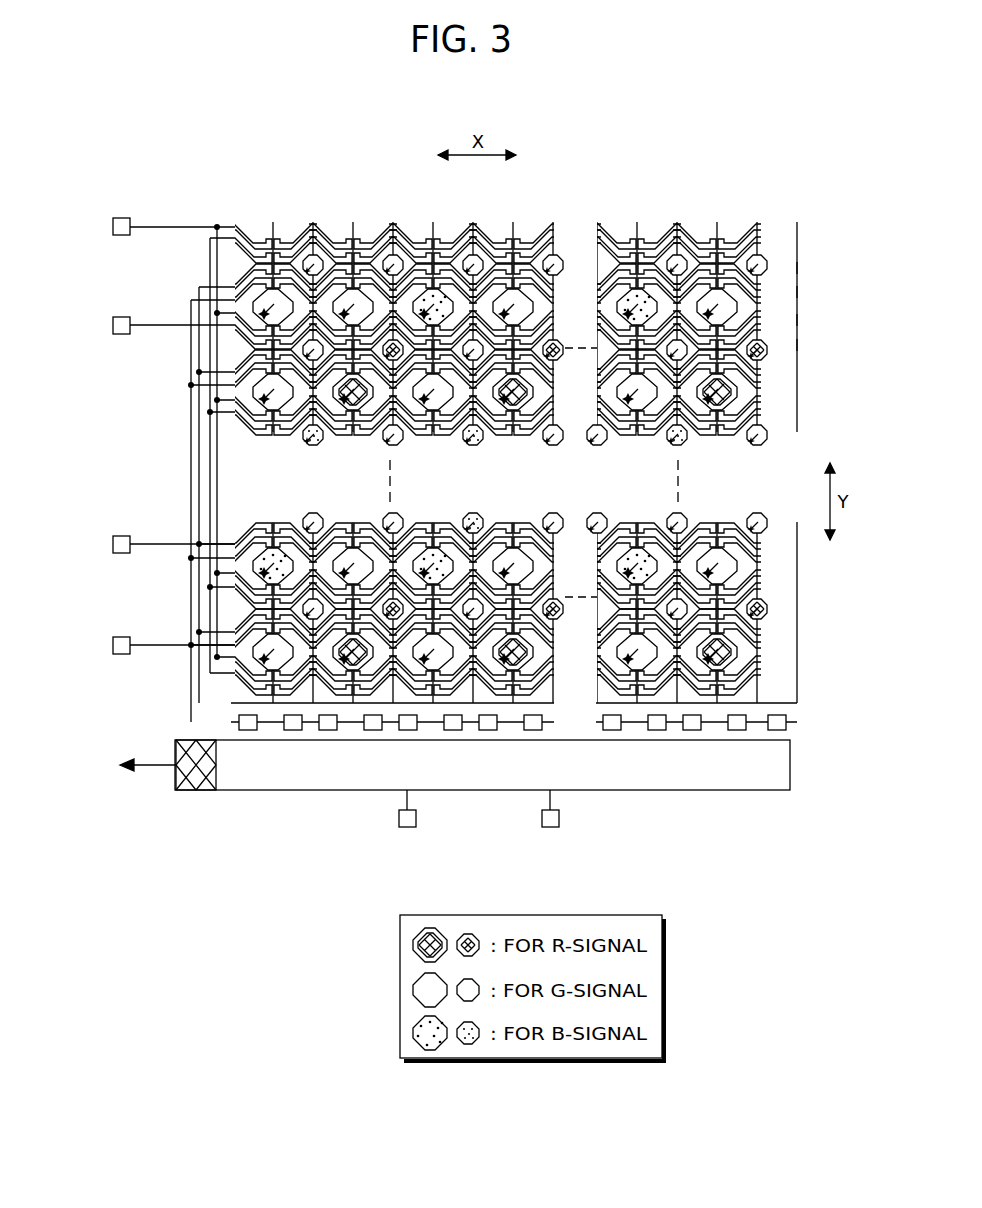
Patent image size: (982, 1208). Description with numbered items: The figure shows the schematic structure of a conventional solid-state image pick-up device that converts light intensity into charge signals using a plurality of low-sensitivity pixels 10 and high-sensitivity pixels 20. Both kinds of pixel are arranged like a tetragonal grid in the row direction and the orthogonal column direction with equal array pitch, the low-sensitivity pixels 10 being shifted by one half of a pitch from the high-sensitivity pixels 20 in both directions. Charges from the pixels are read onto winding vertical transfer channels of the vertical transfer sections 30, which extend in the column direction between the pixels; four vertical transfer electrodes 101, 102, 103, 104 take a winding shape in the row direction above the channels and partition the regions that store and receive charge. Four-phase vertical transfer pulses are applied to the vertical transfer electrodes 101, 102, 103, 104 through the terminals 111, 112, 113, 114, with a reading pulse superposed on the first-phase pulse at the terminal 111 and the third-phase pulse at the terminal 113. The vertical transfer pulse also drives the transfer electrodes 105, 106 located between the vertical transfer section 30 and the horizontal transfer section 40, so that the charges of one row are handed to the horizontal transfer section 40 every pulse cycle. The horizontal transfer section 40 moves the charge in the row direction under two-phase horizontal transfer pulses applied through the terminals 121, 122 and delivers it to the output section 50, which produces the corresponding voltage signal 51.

The low-sensitivity pixel 10 is at (314, 514).
The high-sensitivity pixel 20 is at (278, 395).
The vertical transfer section 30 is at (244, 220).
The horizontal transfer section 40 is at (700, 775).
The output section 50 is at (203, 792).
The voltage signal 51 is at (163, 770).
The vertical transfer electrode 101 is at (798, 269).
The vertical transfer electrode 102 is at (798, 292).
The vertical transfer electrode 103 is at (798, 320).
The vertical transfer electrode 104 is at (798, 345).
The transfer electrode 105 is at (798, 703).
The transfer electrode 106 is at (798, 722).
The terminal 111 is at (112, 543).
The terminal 112 is at (112, 644).
The terminal 113 is at (112, 226).
The terminal 114 is at (112, 324).
The terminal 121 is at (550, 833).
The terminal 122 is at (407, 833).